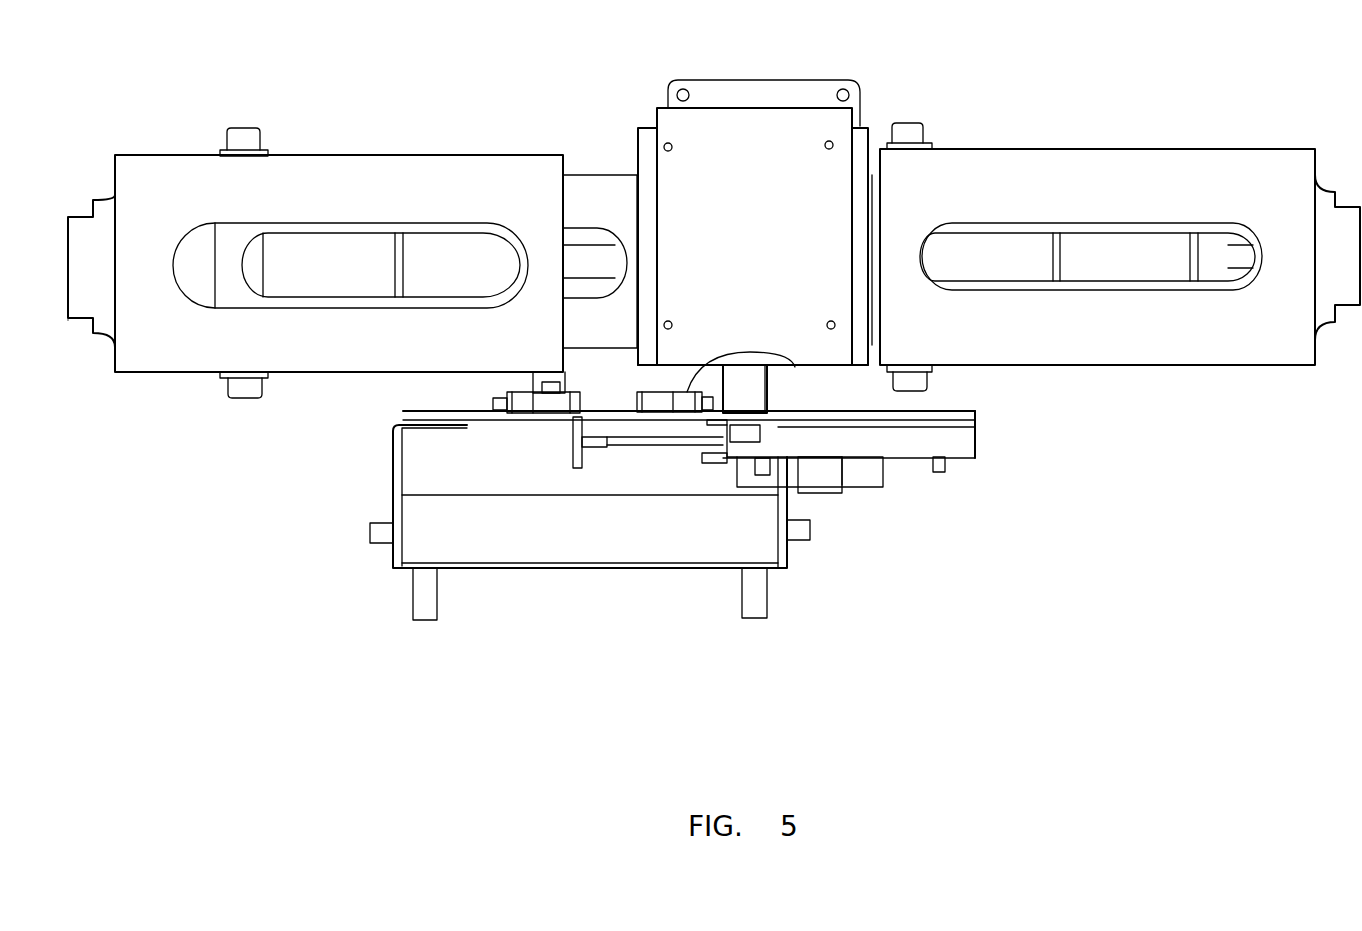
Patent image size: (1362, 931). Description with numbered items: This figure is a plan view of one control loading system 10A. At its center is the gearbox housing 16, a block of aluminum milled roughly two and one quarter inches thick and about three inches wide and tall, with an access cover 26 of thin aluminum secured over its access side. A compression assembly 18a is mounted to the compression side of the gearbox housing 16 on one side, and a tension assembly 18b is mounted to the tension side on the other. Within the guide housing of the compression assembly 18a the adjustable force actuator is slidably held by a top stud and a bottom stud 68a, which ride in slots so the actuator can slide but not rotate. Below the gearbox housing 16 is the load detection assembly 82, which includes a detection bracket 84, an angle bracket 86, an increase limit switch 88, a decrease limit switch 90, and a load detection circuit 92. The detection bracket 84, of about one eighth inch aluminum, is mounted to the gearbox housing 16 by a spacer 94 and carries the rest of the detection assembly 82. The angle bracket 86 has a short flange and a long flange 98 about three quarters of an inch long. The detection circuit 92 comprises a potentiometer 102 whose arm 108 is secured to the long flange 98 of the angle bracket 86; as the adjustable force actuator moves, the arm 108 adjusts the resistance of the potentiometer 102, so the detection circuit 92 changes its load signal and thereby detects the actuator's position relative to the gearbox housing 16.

The loading system 10A is at (1296, 636).
The gearbox housing 16 is at (647, 77).
The compression assembly 18a is at (174, 118).
The tension assembly 18b is at (1176, 105).
The access cover 26 is at (763, 132).
The bottom stud 68a is at (557, 380).
The load detection assembly 82 is at (290, 471).
The detection bracket 84 is at (967, 410).
The angle bracket 86 is at (541, 449).
The increase limit switch 88 is at (509, 394).
The decrease limit switch 90 is at (761, 404).
The load detection circuit 92 is at (858, 572).
The spacer 94 is at (763, 372).
The long flange 98 is at (572, 456).
The potentiometer 102 is at (977, 440).
The arm 108 is at (648, 437).